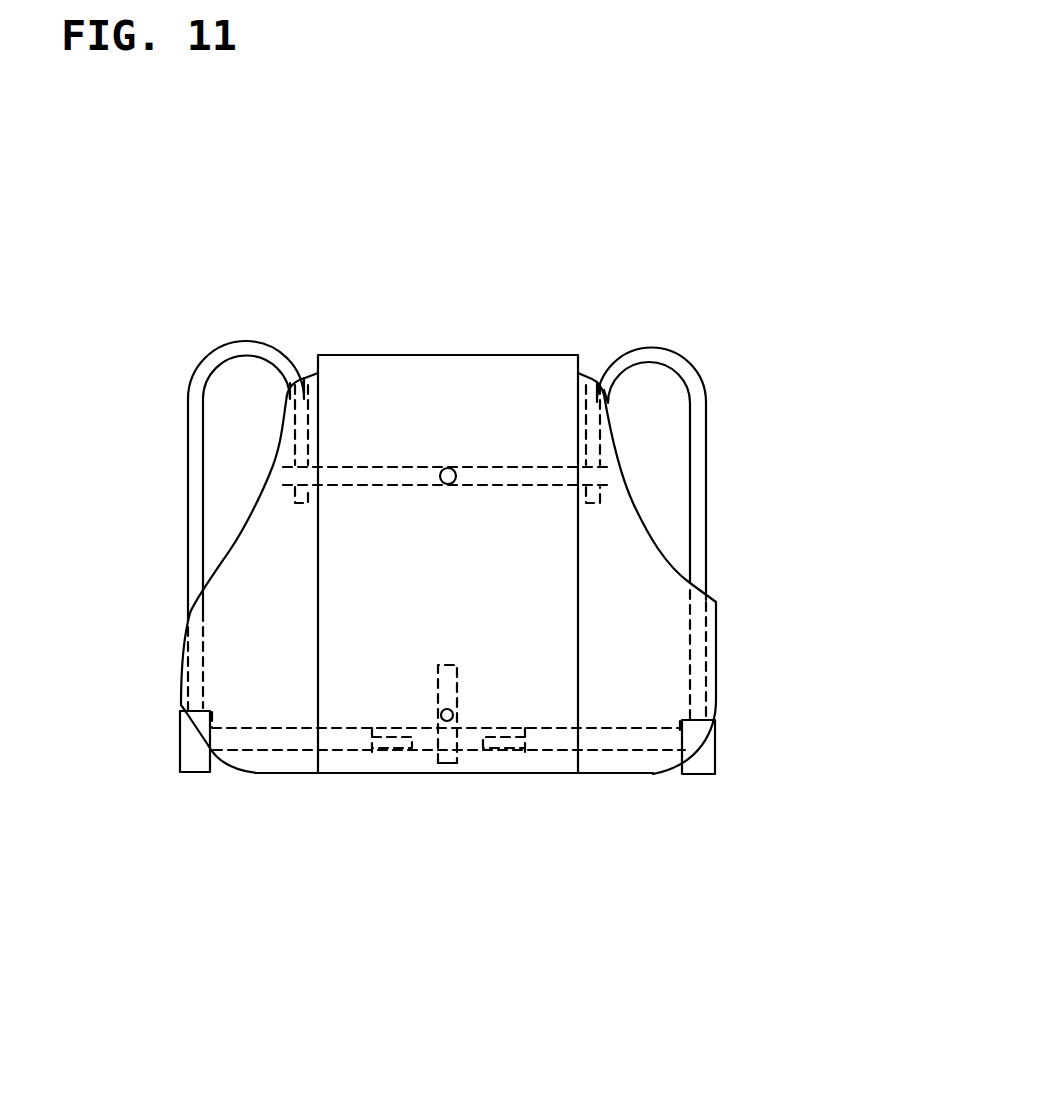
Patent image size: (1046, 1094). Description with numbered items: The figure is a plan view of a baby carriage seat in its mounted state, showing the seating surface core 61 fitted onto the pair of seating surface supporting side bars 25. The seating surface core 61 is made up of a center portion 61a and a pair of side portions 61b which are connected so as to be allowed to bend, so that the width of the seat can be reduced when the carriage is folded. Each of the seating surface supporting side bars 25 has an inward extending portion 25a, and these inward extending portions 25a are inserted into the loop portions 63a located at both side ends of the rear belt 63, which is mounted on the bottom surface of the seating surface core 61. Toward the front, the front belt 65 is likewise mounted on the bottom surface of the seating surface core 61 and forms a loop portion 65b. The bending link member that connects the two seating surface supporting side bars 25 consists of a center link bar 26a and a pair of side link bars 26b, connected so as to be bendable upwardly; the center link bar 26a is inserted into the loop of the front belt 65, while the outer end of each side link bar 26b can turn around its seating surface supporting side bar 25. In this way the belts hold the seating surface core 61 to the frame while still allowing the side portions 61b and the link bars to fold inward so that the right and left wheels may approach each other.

The seating surface core 61 is at (452, 305).
The center portion 61a is at (381, 368).
The side portions 61b is at (232, 618).
The seating surface supporting side bars 25 is at (187, 507).
The inward extending portions 25a is at (293, 430).
The rear belt 63 is at (483, 463).
The loop portions 63a is at (285, 487).
The front belt 65 is at (458, 765).
The loop portion 65b is at (441, 765).
The center link bar 26a is at (432, 752).
The side link bars 26b is at (263, 750).